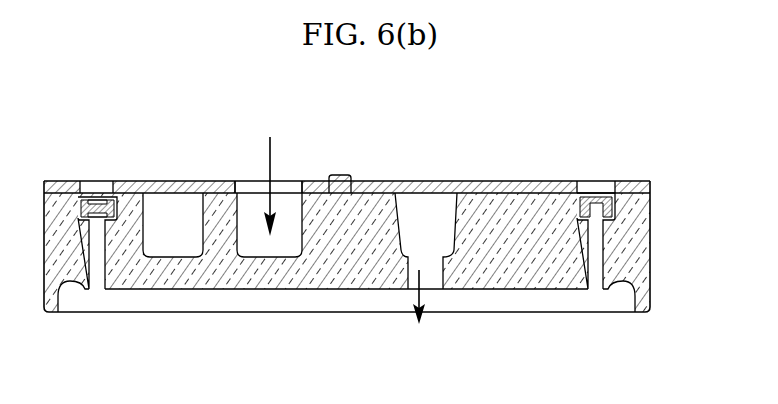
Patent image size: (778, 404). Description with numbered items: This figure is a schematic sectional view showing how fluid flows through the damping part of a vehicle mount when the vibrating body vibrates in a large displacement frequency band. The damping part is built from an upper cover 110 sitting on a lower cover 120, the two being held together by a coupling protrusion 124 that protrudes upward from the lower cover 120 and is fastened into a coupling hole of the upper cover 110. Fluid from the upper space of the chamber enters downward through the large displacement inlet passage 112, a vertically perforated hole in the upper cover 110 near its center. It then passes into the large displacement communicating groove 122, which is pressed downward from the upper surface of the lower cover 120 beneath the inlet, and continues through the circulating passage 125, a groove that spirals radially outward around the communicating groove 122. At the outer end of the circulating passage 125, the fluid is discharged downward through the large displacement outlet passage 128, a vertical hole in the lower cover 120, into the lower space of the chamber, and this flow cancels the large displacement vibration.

The upper cover 110 is at (172, 183).
The large displacement inlet passage 112 is at (295, 190).
The lower cover 120 is at (538, 262).
The large displacement communicating groove 122 is at (266, 251).
The coupling protrusion 124 is at (340, 178).
The circulating passage 125 is at (166, 243).
The large displacement outlet passage 128 is at (434, 262).